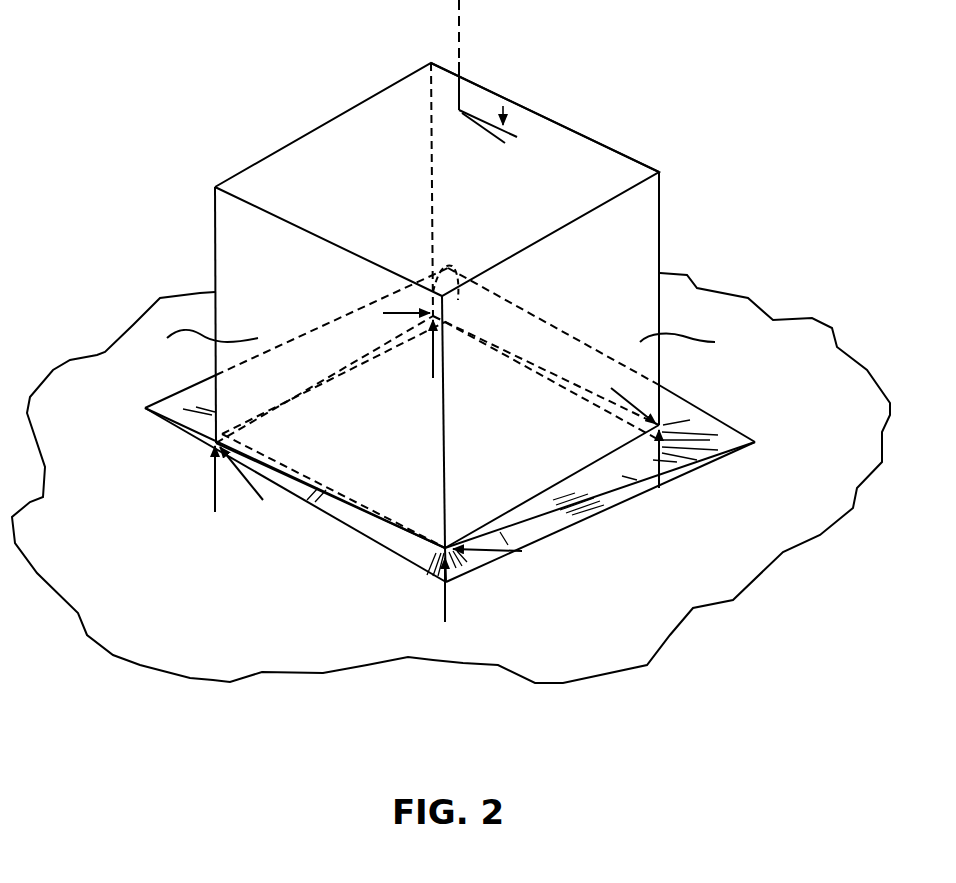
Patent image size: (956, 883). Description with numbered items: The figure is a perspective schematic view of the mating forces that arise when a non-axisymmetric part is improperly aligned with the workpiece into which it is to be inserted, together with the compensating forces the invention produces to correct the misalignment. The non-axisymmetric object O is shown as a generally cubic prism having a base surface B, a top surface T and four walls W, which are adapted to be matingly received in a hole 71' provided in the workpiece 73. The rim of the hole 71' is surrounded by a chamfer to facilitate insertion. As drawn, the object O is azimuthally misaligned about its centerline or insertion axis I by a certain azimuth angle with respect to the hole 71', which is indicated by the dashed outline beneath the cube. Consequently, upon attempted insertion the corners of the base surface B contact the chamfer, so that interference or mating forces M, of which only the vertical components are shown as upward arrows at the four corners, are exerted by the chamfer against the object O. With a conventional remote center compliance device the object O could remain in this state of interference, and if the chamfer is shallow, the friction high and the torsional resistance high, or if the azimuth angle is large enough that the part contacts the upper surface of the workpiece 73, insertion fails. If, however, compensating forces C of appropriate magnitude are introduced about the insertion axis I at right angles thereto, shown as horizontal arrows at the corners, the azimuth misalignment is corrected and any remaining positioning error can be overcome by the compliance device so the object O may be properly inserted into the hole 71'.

The top surface T is at (320, 147).
The non-axisymmetric object O is at (562, 120).
The insertion axis I is at (459, 63).
The walls W is at (260, 268).
The mating forces M is at (438, 485).
The compensating forces C is at (438, 436).
The base surface B is at (388, 483).
The hole 71' is at (616, 512).
The workpiece 73 is at (827, 466).